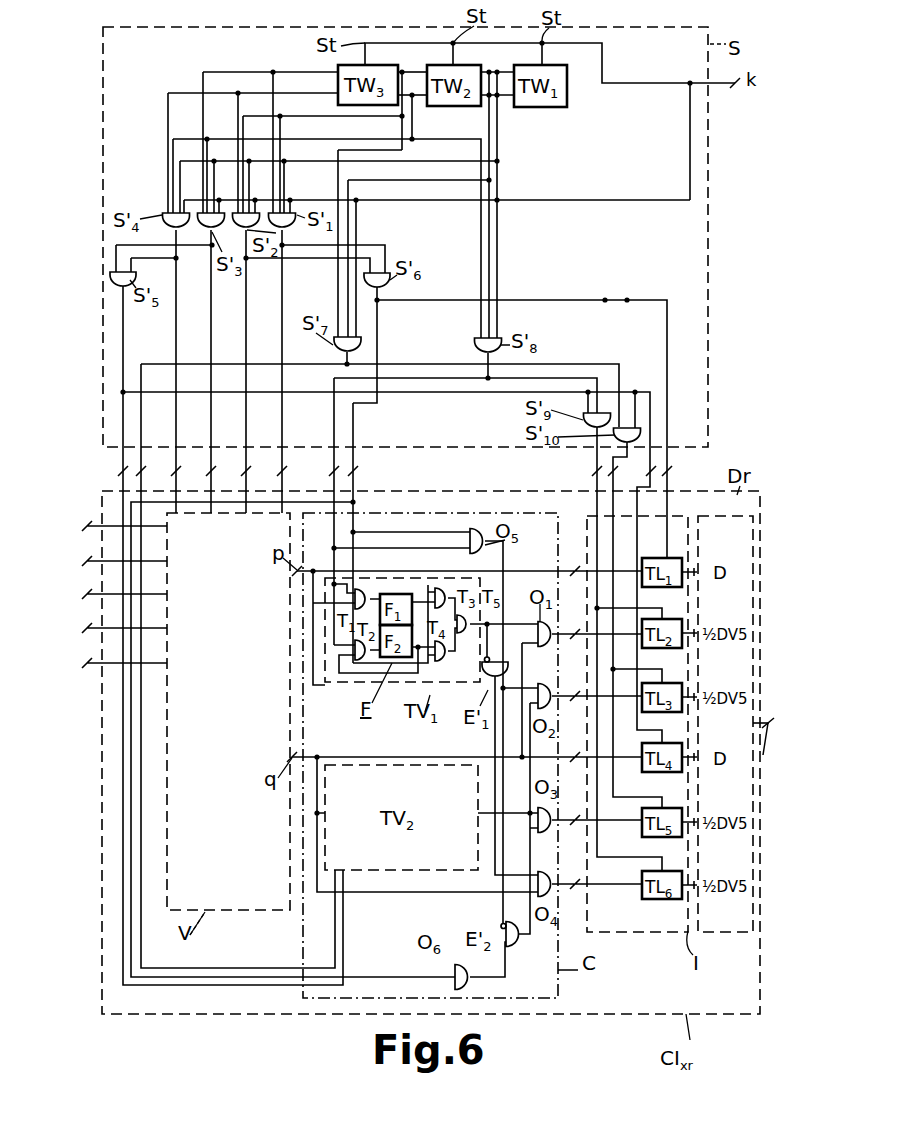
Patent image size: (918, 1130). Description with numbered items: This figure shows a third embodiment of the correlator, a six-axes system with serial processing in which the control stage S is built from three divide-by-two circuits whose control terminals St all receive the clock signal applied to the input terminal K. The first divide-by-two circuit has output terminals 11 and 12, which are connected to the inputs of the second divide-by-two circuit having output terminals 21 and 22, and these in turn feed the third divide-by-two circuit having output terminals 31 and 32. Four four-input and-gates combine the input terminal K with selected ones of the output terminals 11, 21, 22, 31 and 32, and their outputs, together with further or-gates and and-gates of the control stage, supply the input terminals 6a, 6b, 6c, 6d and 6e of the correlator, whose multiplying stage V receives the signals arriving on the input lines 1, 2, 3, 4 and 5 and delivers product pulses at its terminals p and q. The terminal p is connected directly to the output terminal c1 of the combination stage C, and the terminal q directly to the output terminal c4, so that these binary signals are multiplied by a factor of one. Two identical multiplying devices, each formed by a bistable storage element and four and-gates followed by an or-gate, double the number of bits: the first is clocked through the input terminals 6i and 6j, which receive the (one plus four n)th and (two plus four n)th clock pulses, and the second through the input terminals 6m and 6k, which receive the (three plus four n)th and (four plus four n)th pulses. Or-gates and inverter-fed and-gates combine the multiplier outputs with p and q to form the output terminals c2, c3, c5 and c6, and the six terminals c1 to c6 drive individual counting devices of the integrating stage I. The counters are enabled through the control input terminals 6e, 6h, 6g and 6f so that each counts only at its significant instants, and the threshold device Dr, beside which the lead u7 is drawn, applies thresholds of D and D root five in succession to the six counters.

The output terminal of divide-by-two circuit TW3 32 is at (335, 70).
The output terminal of divide-by-two circuit TW3 31 is at (336, 93).
The output terminal of divide-by-two circuit TW2 22 is at (426, 72).
The output terminal of divide-by-two circuit TW2 21 is at (412, 97).
The output terminal of divide-by-two circuit TW1 12 is at (513, 72).
The output terminal of divide-by-two circuit TW1 11 is at (504, 97).
The input line 1 is at (124, 515).
The input line 2 is at (124, 550).
The input line 3 is at (124, 583).
The input line 4 is at (124, 617).
The input line 5 is at (124, 652).
The input terminal of the correlator 6a is at (283, 469).
The input terminal of the correlator 6b is at (247, 469).
The input terminal of the correlator 6c is at (212, 469).
The input terminal of the correlator 6d is at (177, 469).
The input terminal of the correlator 6e is at (669, 474).
The input terminal of the correlator 6f is at (653, 471).
The input terminal of the correlator 6g is at (615, 473).
The input terminal of the correlator 6h is at (595, 471).
The input terminal of the correlator 6i is at (356, 471).
The input terminal of the correlator 6j is at (332, 471).
The input terminal of the correlator 6k is at (143, 473).
The input terminal of the correlator 6m is at (120, 472).
The output terminal of the combination stage c1 is at (600, 559).
The output terminal of the combination stage c2 is at (600, 622).
The output terminal of the combination stage c3 is at (600, 684).
The output terminal of the combination stage c4 is at (600, 743).
The output terminal of the combination stage c5 is at (600, 808).
The output terminal of the combination stage c6 is at (600, 871).
The output u7 is at (768, 751).